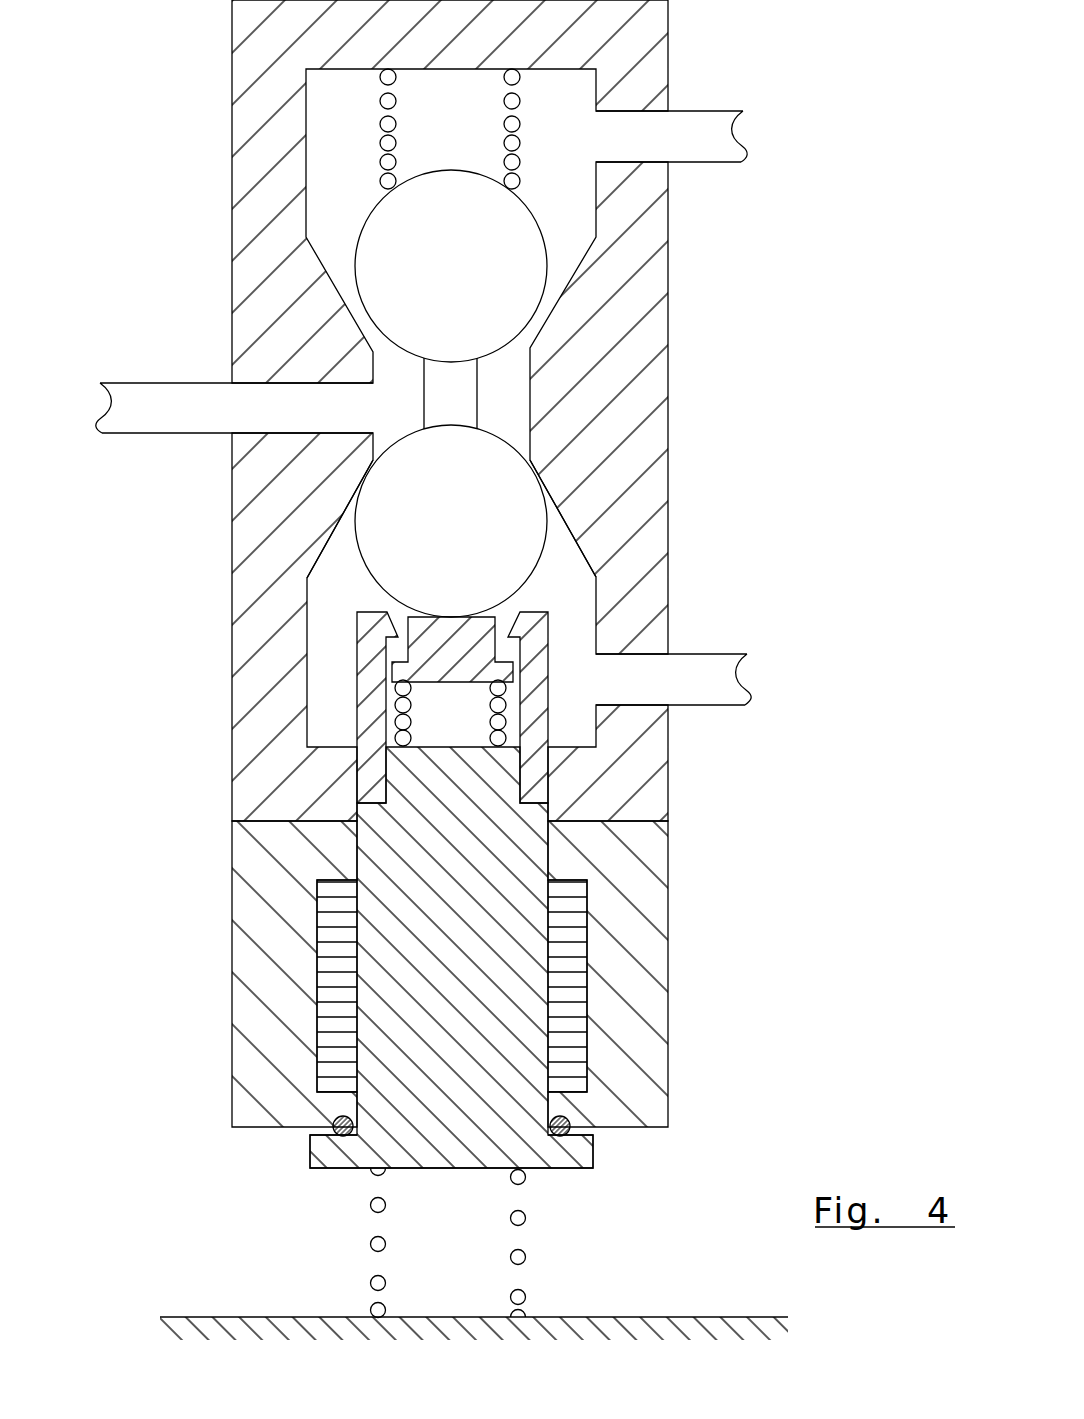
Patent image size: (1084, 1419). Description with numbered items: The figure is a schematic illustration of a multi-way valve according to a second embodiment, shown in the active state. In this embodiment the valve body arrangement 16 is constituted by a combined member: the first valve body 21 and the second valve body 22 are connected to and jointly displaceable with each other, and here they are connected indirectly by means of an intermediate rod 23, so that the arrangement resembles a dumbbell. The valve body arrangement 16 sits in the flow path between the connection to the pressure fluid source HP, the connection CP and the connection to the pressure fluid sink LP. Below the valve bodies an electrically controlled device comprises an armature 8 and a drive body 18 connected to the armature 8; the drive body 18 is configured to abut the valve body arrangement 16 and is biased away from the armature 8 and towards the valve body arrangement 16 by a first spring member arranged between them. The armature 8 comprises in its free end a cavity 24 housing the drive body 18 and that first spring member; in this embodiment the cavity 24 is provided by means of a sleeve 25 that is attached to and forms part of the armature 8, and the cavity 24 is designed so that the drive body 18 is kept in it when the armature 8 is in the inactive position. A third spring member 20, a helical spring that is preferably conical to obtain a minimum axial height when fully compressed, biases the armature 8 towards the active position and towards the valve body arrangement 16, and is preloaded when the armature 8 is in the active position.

The armature 8 is at (350, 1172).
The valve body arrangement 16 is at (340, 542).
The drive body 18 is at (430, 639).
The third spring member 20 is at (380, 1282).
The first valve body 21 is at (499, 513).
The second valve body 22 is at (503, 286).
The intermediate rod 23 is at (450, 394).
The cavity 24 is at (445, 718).
The sleeve 25 is at (363, 692).
The pressure fluid source HP is at (697, 136).
The control pressure connection CP is at (209, 408).
The pressure fluid sink LP is at (700, 679).